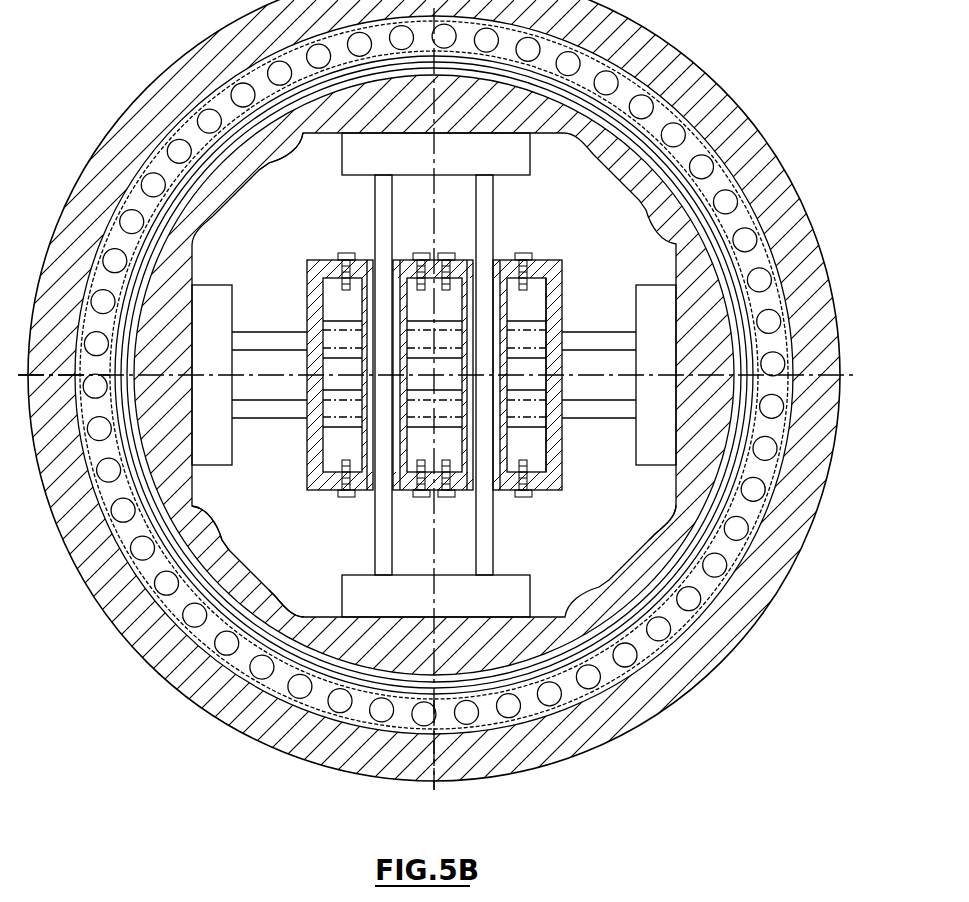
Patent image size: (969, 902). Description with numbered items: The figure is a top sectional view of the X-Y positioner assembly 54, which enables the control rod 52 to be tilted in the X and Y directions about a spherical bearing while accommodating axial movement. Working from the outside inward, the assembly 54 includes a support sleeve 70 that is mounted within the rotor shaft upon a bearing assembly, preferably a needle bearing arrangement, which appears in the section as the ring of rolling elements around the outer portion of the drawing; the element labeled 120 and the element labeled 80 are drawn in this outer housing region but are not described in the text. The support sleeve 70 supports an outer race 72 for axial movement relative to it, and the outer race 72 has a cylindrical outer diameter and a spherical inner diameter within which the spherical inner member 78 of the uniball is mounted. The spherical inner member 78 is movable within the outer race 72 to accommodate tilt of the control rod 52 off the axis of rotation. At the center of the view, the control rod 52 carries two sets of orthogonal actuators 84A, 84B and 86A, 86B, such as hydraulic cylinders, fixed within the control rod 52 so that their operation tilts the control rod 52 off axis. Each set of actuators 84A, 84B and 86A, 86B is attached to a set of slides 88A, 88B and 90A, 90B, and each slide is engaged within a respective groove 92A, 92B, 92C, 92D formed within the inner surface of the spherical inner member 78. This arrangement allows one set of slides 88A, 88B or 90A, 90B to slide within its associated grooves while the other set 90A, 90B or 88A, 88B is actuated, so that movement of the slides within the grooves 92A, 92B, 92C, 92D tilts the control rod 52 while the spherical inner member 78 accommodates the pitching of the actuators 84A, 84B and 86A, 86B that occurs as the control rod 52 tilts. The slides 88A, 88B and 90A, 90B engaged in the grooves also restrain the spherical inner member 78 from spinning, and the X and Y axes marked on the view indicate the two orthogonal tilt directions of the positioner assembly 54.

The X-Y positioner assembly 54 is at (277, 763).
The outer housing 120 is at (703, 70).
The housing wall 80 is at (800, 216).
The outer race 72 is at (736, 100).
The support sleeve 70 is at (763, 136).
The spherical inner member 78 is at (710, 428).
The control rod 52 is at (555, 284).
The orthogonal actuator 84A is at (520, 534).
The orthogonal actuator 84B is at (375, 516).
The orthogonal actuator 86A is at (265, 325).
The orthogonal actuator 86B is at (254, 420).
The slide 88A is at (498, 609).
The slide 88B is at (418, 169).
The slide 90A is at (208, 338).
The slide 90B is at (662, 347).
The groove 92A is at (322, 613).
The groove 92B is at (193, 483).
The groove 92C is at (302, 140).
The groove 92D is at (676, 490).
The X direction X is at (438, 768).
The Y direction Y is at (110, 408).